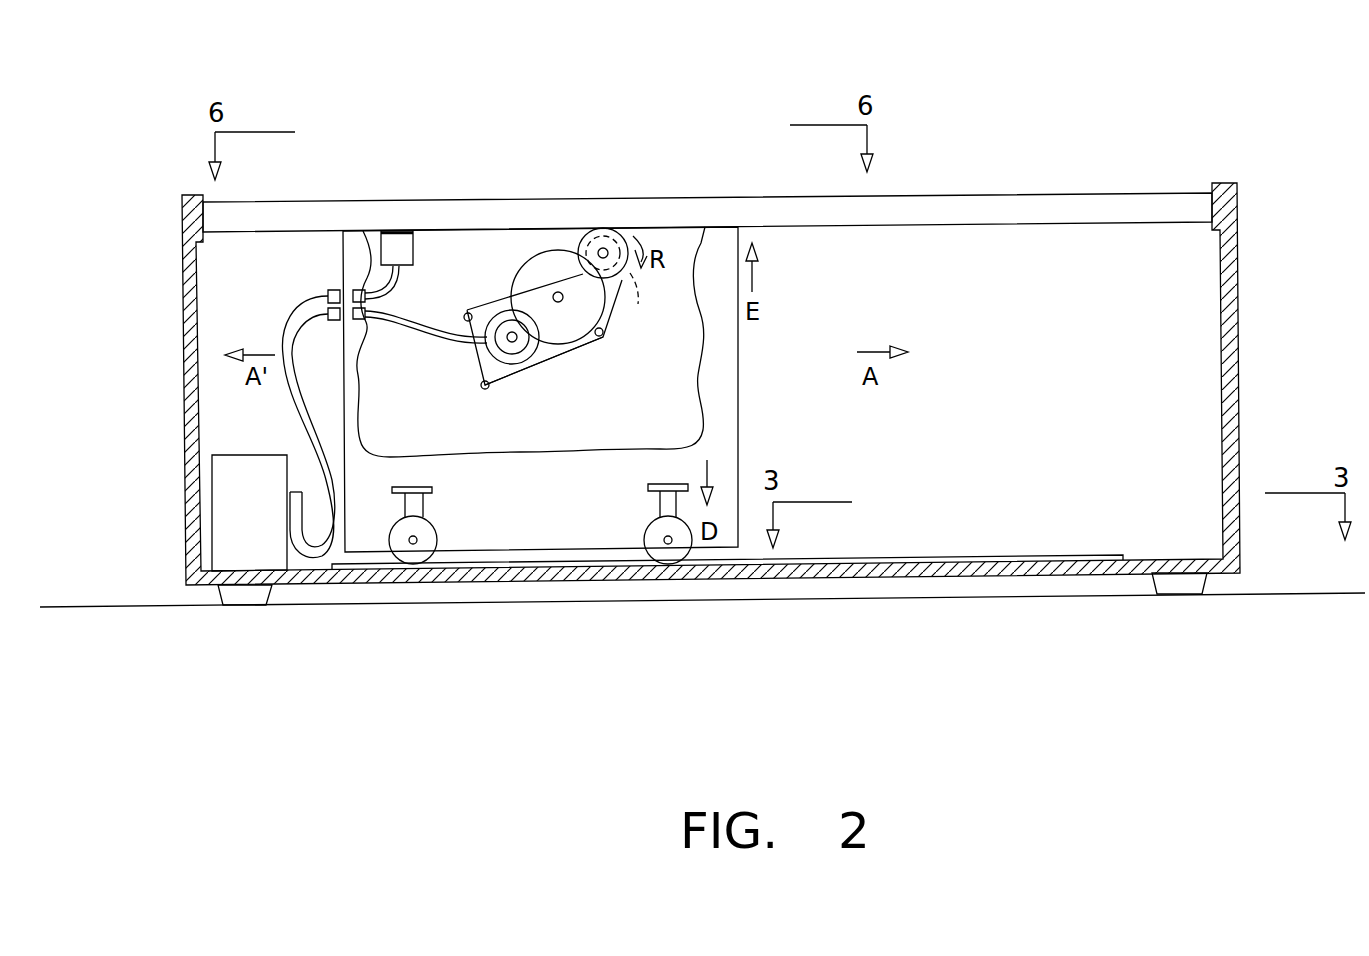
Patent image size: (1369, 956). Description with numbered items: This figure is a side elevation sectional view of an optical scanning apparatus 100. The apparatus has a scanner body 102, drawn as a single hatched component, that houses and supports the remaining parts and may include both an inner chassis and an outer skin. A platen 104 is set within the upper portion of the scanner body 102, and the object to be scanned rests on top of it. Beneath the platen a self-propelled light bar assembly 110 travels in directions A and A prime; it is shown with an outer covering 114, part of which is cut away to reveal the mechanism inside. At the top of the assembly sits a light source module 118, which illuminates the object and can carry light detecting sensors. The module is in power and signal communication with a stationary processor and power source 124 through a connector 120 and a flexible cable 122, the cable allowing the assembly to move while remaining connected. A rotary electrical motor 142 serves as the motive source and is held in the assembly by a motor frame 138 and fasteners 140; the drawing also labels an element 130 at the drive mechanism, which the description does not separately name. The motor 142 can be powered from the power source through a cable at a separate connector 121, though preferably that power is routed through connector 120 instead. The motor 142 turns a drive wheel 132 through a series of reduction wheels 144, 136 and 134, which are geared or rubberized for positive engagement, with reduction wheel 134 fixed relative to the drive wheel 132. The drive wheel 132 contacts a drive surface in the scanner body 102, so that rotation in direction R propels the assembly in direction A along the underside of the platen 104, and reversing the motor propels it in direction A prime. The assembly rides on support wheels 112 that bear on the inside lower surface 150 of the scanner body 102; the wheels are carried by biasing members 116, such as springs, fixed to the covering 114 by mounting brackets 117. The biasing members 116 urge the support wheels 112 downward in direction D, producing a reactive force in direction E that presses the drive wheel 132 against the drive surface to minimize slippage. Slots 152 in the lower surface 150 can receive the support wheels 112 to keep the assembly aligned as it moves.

The optical scanning apparatus 100 is at (1067, 97).
The scanner body 102 is at (1241, 413).
The platen 104 is at (1103, 205).
The light bar assembly 110 is at (756, 408).
The support wheels 112 is at (438, 540).
The outer covering 114 is at (739, 451).
The biasing members 116 is at (425, 505).
The mounting brackets 117 is at (405, 487).
The light source module 118 is at (414, 250).
The connector 120 is at (340, 292).
The connector 121 is at (333, 322).
The flexible cable 122 is at (284, 340).
The processor and power source 124 is at (250, 470).
The mounting plate 130 is at (593, 366).
The drive wheel 132 is at (604, 230).
The reduction wheel 134 is at (645, 303).
The reduction wheel 136 is at (514, 281).
The motor frame 138 is at (542, 366).
The fasteners 140 is at (464, 315).
The rotary electrical motor 142 is at (484, 338).
The reduction wheel 144 is at (472, 368).
The inside lower surface 150 is at (1156, 558).
The slots 152 is at (991, 557).